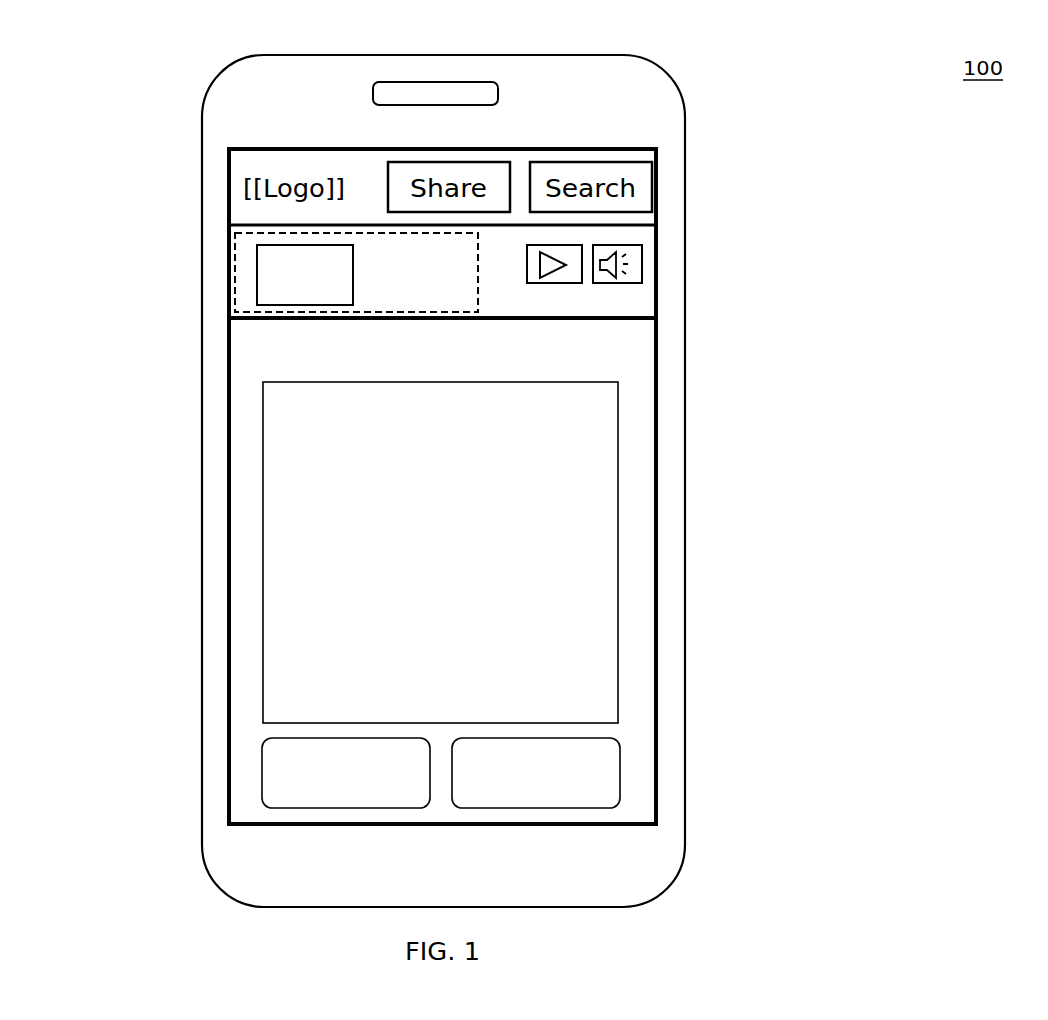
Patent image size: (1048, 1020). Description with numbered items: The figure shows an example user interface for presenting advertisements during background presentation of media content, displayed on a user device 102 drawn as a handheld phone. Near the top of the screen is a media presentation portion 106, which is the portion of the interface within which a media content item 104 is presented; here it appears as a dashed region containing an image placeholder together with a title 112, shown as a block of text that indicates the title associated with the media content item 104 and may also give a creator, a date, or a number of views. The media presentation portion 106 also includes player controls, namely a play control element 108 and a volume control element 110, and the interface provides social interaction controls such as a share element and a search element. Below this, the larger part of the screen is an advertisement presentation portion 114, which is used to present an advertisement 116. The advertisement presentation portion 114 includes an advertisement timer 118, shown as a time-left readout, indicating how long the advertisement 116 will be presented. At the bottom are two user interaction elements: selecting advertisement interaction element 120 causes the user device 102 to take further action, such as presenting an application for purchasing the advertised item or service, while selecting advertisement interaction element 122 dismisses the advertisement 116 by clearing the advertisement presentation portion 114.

The user device 102 is at (661, 107).
The media content item 104 is at (229, 278).
The media presentation portion 106 is at (457, 203).
The play control element 108 is at (567, 256).
The volume control element 110 is at (632, 262).
The title 112 is at (370, 270).
The advertisement presentation portion 114 is at (504, 536).
The advertisement 116 is at (594, 565).
The advertisement timer 118 is at (244, 347).
The advertisement interaction element 120 is at (262, 782).
The advertisement interaction element 122 is at (620, 773).